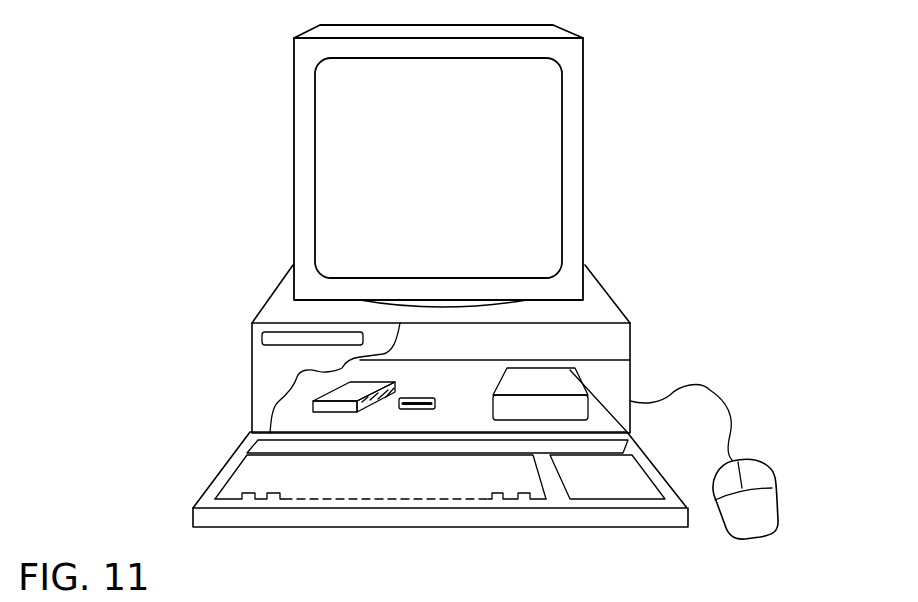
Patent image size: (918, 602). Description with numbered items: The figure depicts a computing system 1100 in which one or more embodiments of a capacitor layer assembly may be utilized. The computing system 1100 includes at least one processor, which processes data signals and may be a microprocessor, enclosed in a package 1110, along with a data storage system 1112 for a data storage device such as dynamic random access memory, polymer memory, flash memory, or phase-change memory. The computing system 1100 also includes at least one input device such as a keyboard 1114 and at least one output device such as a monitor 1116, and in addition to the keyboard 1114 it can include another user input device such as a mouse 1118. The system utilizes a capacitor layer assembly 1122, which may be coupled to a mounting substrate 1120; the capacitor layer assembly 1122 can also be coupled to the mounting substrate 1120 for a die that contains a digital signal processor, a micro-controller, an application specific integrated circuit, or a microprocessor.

The computing system 1100 is at (782, 127).
The monitor 1116 is at (585, 130).
The package 1110 is at (340, 393).
The capacitor layer assembly 1122 is at (412, 398).
The mounting substrate 1120 is at (475, 398).
The data storage system 1112 is at (568, 380).
The keyboard 1114 is at (220, 472).
The mouse 1118 is at (763, 507).